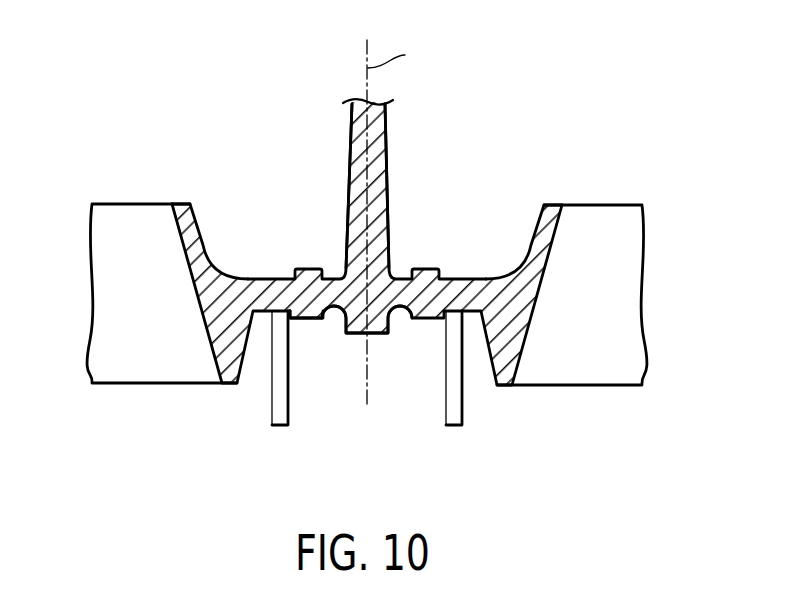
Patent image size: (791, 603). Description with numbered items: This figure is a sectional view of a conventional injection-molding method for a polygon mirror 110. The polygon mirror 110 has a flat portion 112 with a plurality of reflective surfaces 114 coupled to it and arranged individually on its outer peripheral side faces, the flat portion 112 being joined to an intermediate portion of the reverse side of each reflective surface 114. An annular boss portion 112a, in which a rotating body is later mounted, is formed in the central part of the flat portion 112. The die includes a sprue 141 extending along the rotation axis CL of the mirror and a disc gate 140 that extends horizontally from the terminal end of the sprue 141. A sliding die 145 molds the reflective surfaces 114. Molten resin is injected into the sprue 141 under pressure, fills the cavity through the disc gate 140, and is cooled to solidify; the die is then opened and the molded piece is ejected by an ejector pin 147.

The polygon mirror 110 is at (473, 197).
The flat portion 112 is at (253, 280).
The annular boss portion 112a is at (306, 318).
The reflective surface 114 is at (527, 357).
The disc gate 140 is at (395, 318).
The sprue 141 is at (388, 167).
The sliding die 145 is at (153, 368).
The ejector pin 147 is at (278, 427).